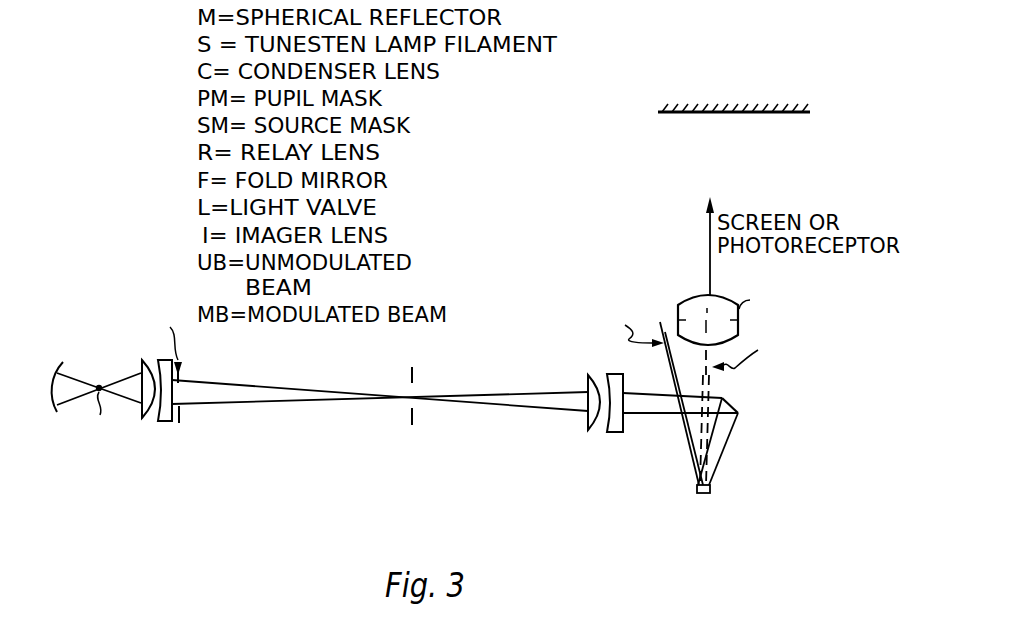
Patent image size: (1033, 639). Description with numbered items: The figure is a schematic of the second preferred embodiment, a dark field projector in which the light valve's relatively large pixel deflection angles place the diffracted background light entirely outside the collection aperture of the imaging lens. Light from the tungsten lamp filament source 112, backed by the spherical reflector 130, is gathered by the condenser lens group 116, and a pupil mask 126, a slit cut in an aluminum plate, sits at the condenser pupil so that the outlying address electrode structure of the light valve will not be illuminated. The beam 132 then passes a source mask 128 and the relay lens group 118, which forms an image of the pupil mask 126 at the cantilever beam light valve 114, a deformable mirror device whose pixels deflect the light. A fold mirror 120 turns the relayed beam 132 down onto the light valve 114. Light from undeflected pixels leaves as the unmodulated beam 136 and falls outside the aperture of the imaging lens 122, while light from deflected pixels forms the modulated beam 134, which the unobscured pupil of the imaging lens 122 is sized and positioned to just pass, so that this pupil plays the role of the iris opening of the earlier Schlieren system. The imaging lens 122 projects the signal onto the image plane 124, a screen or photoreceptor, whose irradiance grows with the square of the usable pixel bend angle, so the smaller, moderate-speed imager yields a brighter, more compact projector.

The light source 112 is at (99, 385).
The cantilever beam light valve 114 is at (700, 496).
The condenser lens group 116 is at (156, 418).
The relay lens group 118 is at (600, 432).
The fold mirror F 120 is at (738, 414).
The imaging lens 122 is at (731, 295).
The image plane 124 is at (768, 113).
The pupil mask 126 is at (240, 352).
The source mask SM 128 is at (412, 369).
The spherical reflector M 130 is at (58, 414).
The light beam rays 132 is at (290, 400).
The modulated beam MB 134 is at (755, 396).
The unmodulated beam UB 136 is at (643, 386).